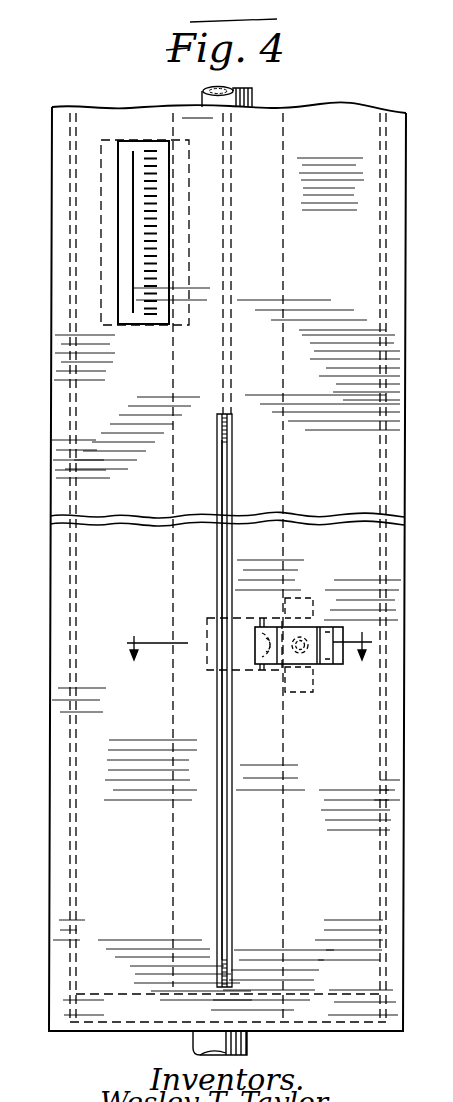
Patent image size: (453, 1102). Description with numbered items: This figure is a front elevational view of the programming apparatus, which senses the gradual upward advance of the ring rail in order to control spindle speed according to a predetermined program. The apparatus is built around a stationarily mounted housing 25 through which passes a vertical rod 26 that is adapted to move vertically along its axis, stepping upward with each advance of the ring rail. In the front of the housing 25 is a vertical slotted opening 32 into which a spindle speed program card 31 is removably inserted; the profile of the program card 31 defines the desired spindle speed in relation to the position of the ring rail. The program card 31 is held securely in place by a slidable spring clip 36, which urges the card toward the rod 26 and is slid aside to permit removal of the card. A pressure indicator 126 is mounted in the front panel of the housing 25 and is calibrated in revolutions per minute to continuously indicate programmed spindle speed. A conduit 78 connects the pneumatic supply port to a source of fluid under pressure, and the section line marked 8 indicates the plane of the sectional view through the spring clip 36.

The housing 25 is at (52, 135).
The vertical rod 26 is at (248, 97).
The pressure indicator 126 is at (126, 141).
The spindle speed program card 31 is at (225, 828).
The vertical slotted opening 32 is at (228, 866).
The slidable spring clip 36 is at (327, 665).
The conduit 78 is at (24, 730).
The section line 8- 8 is at (249, 637).